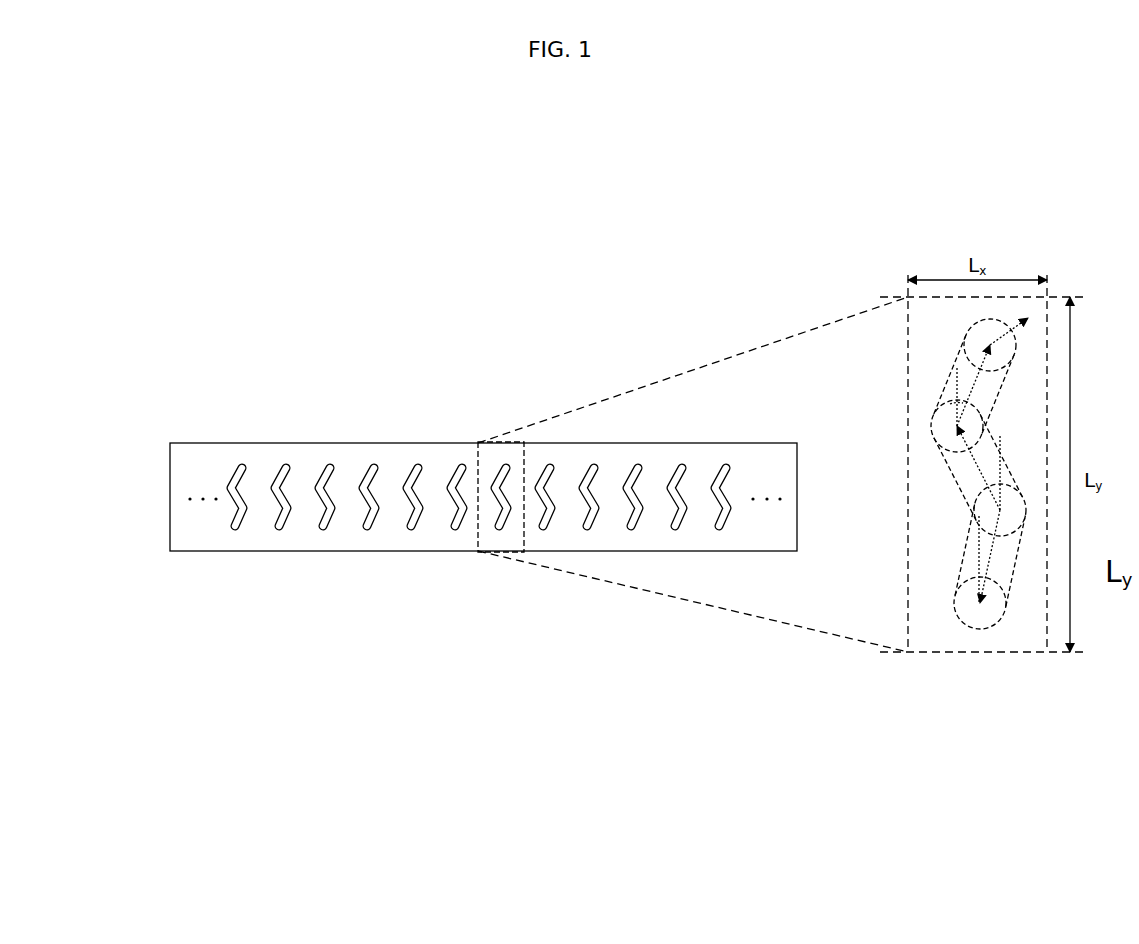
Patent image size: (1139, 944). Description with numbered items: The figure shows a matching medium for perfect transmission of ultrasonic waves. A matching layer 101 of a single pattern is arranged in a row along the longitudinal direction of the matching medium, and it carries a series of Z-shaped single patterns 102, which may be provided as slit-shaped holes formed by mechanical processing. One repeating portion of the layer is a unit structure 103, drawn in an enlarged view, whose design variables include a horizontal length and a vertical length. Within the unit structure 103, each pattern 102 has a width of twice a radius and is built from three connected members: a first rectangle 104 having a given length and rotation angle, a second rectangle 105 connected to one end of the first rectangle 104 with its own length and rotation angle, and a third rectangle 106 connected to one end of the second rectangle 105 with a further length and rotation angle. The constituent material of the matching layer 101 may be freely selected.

The matching layer 101 is at (215, 551).
The Z-shaped single pattern 102 is at (238, 463).
The unit structure 103 is at (500, 442).
The first rectangle 104 is at (990, 385).
The second rectangle 105 is at (962, 494).
The third rectangle 106 is at (962, 567).